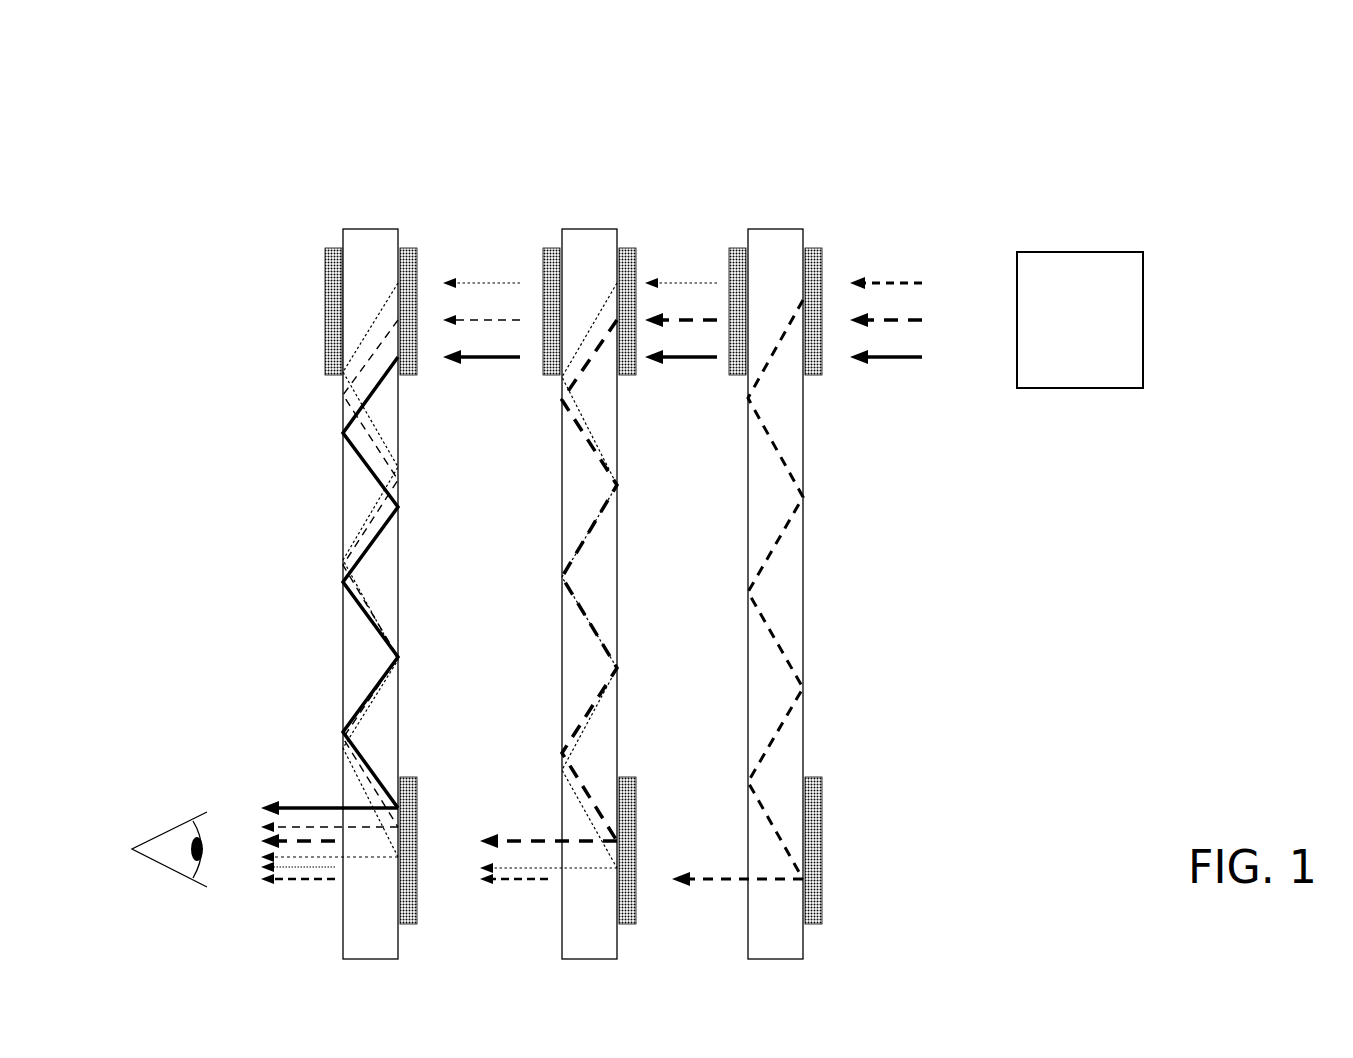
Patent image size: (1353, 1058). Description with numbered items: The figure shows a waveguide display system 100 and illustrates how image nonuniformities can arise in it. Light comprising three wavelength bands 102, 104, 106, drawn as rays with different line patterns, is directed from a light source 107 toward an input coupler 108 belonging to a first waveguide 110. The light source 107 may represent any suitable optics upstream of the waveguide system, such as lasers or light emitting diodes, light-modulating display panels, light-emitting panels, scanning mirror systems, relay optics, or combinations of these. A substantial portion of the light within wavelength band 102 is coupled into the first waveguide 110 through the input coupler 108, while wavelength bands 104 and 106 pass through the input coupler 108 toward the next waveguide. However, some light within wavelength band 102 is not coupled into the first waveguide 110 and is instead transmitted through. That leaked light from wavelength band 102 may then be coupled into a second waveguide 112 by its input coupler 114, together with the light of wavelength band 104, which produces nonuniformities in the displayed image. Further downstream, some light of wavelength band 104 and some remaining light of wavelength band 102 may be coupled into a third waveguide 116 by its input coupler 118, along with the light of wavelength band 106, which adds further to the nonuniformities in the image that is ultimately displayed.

The waveguide display system 100 is at (608, 78).
The first wavelength band 102 is at (923, 266).
The second wavelength band 104 is at (923, 303).
The third wavelength band 106 is at (923, 341).
The light source 107 is at (1062, 362).
The input coupler 108 is at (812, 248).
The first waveguide 110 is at (775, 228).
The second waveguide 112 is at (590, 228).
The input coupler 114 is at (627, 248).
The third waveguide 116 is at (370, 228).
The input coupler 118 is at (408, 248).